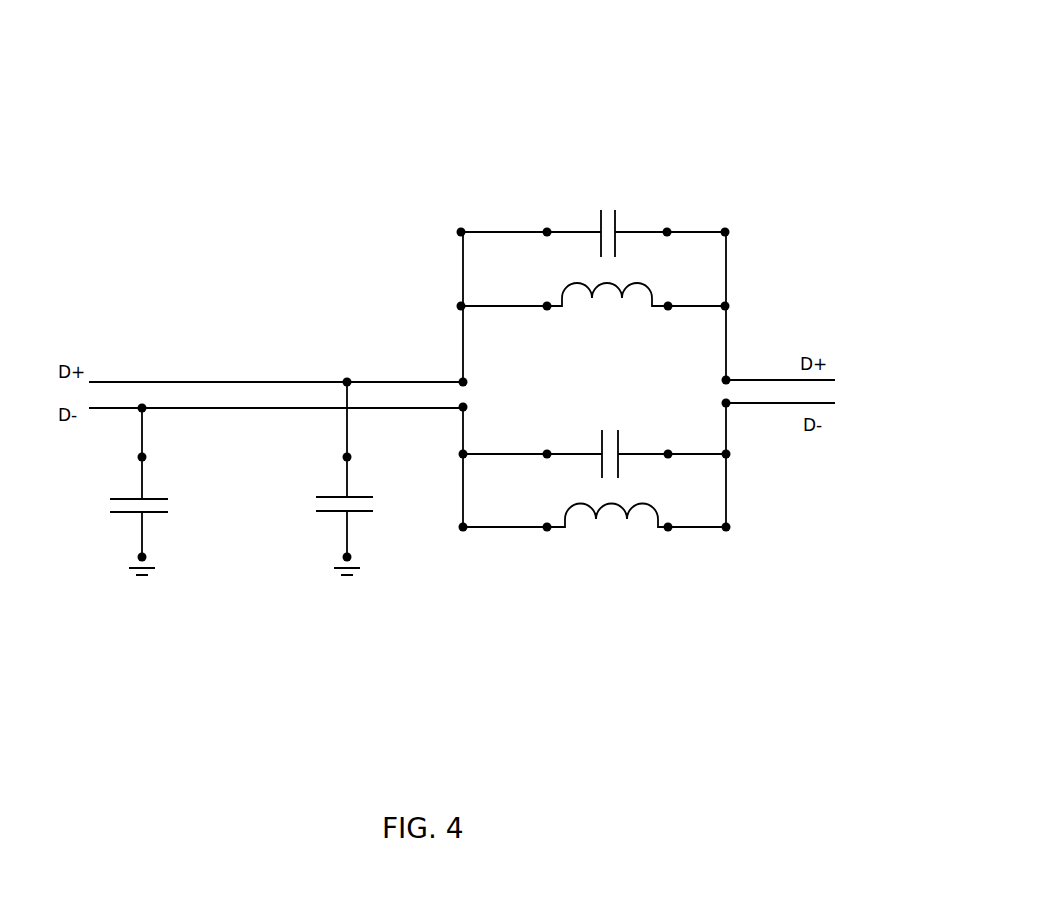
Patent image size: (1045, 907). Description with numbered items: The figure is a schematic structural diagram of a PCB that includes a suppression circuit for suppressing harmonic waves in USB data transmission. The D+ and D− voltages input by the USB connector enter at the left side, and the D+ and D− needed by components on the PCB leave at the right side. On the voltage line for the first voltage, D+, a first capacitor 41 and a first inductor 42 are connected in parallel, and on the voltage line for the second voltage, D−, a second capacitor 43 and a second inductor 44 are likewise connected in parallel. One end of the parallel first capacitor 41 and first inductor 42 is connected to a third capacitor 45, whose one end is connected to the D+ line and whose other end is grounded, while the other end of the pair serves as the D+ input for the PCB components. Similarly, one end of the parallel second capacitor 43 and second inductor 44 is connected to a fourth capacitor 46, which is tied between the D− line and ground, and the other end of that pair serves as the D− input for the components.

The first capacitor 41 is at (612, 222).
The first inductor 42 is at (655, 290).
The second capacitor 43 is at (599, 468).
The second inductor 44 is at (653, 523).
The third capacitor 45 is at (330, 512).
The fourth capacitor 46 is at (117, 518).